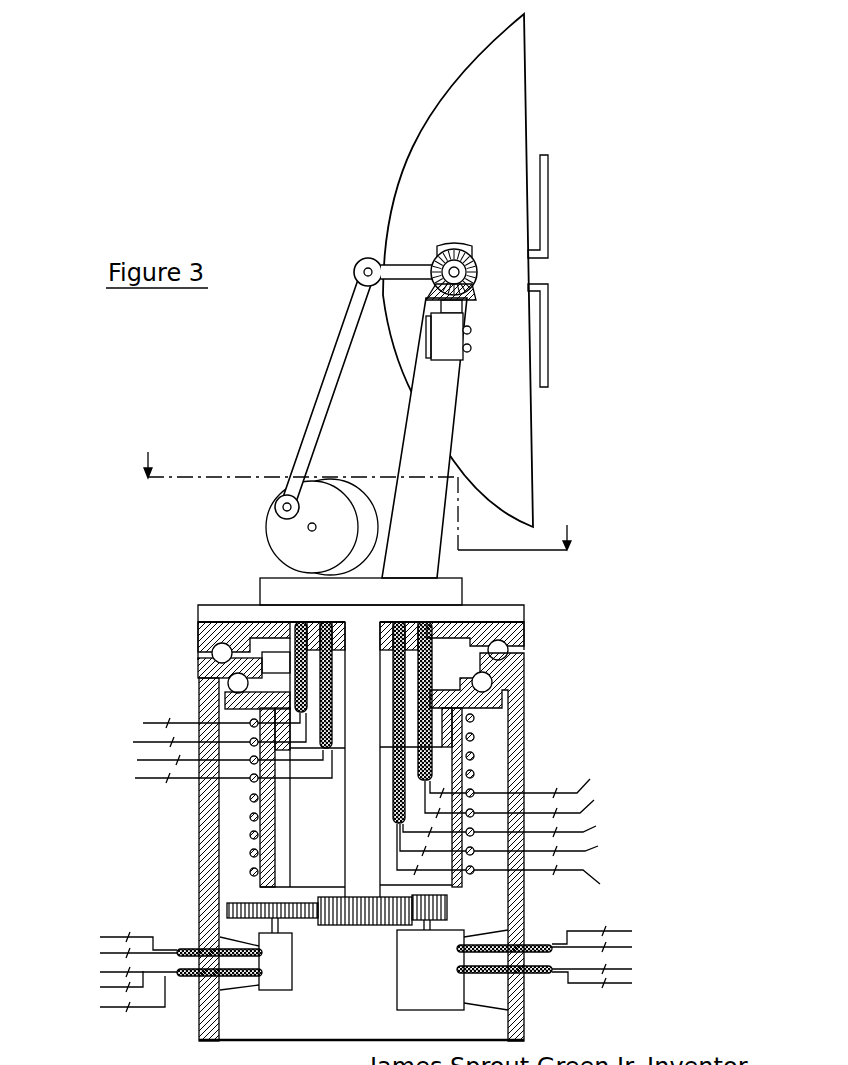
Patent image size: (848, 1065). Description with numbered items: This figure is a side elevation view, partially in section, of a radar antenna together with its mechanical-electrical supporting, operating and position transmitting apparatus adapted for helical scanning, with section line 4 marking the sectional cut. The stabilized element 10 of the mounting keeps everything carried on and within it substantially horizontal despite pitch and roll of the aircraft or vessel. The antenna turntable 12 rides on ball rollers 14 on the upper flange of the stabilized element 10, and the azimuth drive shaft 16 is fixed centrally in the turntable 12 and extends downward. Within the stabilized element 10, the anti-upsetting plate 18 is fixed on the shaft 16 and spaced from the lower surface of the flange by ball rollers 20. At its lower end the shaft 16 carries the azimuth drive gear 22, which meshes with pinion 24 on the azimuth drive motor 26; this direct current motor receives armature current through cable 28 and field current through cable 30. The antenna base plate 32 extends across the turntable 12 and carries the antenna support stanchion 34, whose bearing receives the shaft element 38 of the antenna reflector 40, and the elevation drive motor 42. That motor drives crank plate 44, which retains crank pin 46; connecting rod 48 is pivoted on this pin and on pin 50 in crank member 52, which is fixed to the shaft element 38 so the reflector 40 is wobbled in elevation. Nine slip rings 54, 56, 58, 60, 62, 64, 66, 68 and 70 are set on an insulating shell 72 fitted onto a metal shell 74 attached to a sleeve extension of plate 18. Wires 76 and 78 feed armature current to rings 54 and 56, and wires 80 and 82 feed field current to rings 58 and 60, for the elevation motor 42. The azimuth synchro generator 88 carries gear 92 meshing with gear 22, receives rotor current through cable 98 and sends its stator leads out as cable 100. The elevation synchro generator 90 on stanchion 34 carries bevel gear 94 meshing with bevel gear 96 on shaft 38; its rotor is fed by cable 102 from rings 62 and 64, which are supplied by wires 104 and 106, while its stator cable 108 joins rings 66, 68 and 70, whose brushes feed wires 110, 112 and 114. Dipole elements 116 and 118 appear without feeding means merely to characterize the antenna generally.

The section line 4- 4 is at (357, 490).
The stabilized element 10 is at (517, 703).
The antenna turntable 12 is at (212, 613).
The ball rollers 14 is at (510, 643).
The azimuth drive shaft 16 is at (357, 803).
The anti-upsetting plate 18 is at (226, 703).
The ball rollers 20 is at (215, 677).
The azimuth drive gear 22 is at (370, 922).
The pinion 24 is at (449, 910).
The azimuth drive motor 26 is at (412, 988).
The cable 28 is at (541, 945).
The cable 30 is at (540, 973).
The antenna base plate 32 is at (460, 592).
The antenna support stanchion 34 is at (425, 423).
The shaft element 38 is at (457, 261).
The antenna reflector 40 is at (443, 120).
The elevation drive motor 42 is at (360, 511).
The crank plate 44 is at (276, 534).
The crank pin 46 is at (282, 506).
The connecting rod 48 is at (323, 389).
The pin 50 is at (366, 268).
The crank member 52 is at (402, 273).
The slip ring 54 is at (474, 718).
The slip ring 56 is at (474, 737).
The slip ring 58 is at (474, 756).
The slip ring 60 is at (474, 774).
The slip ring 62 is at (251, 798).
The slip ring 64 is at (251, 817).
The slip ring 66 is at (251, 835).
The slip ring 68 is at (251, 853).
The slip ring 70 is at (251, 872).
The insulating shell 72 is at (472, 882).
The metal shell 74 is at (280, 833).
The wire 76 is at (143, 723).
The wire 78 is at (133, 742).
The wire 80 is at (137, 760).
The wire 82 is at (137, 778).
The azimuth synchro generator 88 is at (282, 977).
The elevation synchro generator 90 is at (447, 356).
The gear 92 is at (297, 919).
The bevel gear 94 is at (473, 295).
The bevel gear 96 is at (478, 272).
The cable 98 is at (258, 949).
The cable 100 is at (196, 977).
The cable 102 is at (472, 348).
The wire 104 is at (526, 779).
The wire 106 is at (528, 799).
The cable 108 is at (472, 330).
The wire 110 is at (518, 826).
The wire 112 is at (516, 842).
The wire 114 is at (512, 858).
The dipole element 116 is at (541, 187).
The dipole element 118 is at (548, 316).